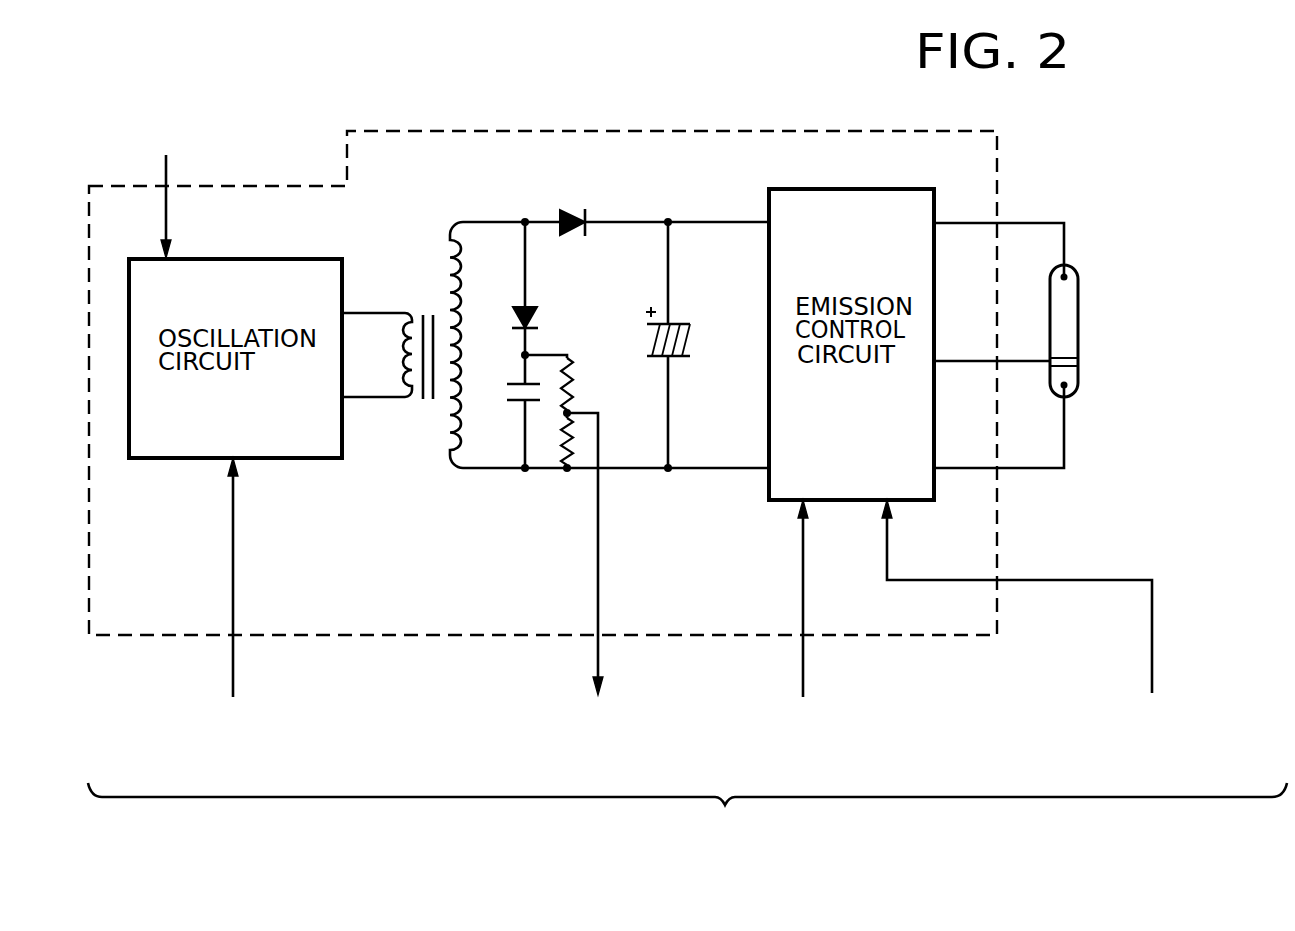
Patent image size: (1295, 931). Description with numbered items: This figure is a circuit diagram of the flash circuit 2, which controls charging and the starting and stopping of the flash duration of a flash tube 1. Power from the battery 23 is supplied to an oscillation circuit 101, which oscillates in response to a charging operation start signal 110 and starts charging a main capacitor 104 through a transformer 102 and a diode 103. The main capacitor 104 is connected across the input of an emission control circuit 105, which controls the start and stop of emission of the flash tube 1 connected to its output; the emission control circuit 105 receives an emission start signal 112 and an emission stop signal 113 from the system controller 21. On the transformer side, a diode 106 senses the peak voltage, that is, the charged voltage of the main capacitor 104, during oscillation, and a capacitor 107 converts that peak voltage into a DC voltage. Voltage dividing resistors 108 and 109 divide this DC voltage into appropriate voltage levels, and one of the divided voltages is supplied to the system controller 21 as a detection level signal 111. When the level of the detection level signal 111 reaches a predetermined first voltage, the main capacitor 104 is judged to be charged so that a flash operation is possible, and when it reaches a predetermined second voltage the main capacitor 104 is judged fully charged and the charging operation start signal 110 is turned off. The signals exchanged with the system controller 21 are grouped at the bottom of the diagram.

The flash tube 1 is at (1078, 310).
The flash circuit 2 is at (543, 362).
The system controller 21 is at (687, 812).
The battery 23 is at (199, 189).
The oscillation circuit 101 is at (162, 460).
The transformer 102 is at (428, 403).
The diode 103 is at (572, 210).
The main capacitor 104 is at (683, 323).
The emission control circuit 105 is at (769, 500).
The diode 106 is at (537, 306).
The capacitor 107 is at (520, 402).
The voltage dividing resistor 108 is at (575, 382).
The voltage dividing resistor 109 is at (553, 448).
The charging operation start signal 110 is at (227, 607).
The detection level signal 111 is at (583, 584).
The emission start signal 112 is at (837, 628).
The emission stop signal 113 is at (1066, 628).